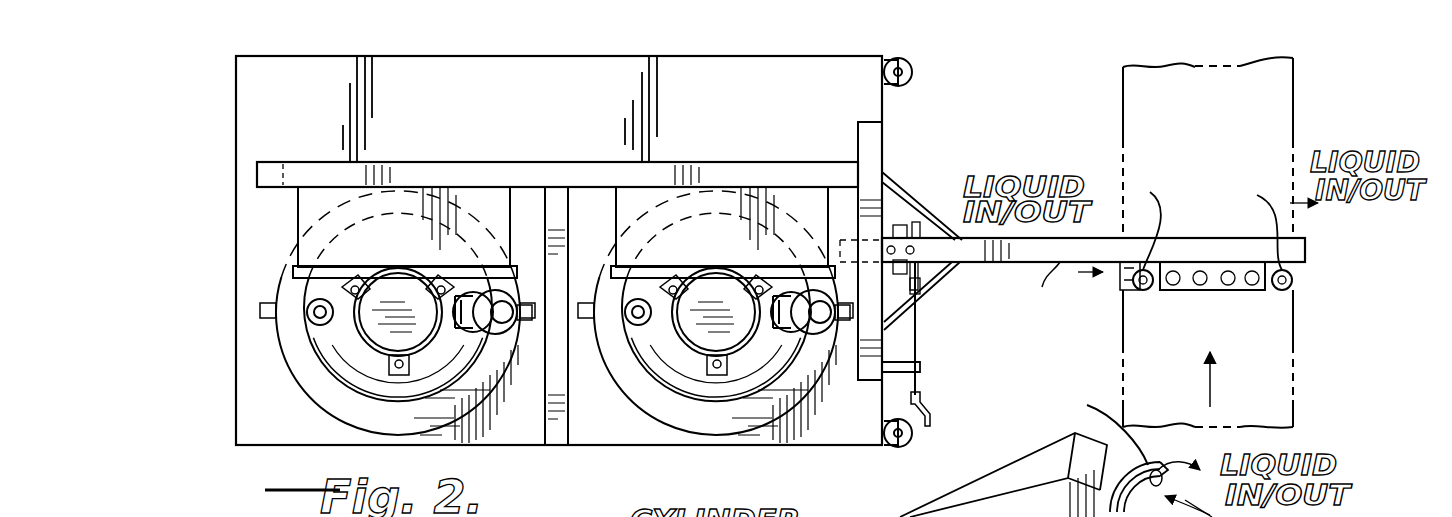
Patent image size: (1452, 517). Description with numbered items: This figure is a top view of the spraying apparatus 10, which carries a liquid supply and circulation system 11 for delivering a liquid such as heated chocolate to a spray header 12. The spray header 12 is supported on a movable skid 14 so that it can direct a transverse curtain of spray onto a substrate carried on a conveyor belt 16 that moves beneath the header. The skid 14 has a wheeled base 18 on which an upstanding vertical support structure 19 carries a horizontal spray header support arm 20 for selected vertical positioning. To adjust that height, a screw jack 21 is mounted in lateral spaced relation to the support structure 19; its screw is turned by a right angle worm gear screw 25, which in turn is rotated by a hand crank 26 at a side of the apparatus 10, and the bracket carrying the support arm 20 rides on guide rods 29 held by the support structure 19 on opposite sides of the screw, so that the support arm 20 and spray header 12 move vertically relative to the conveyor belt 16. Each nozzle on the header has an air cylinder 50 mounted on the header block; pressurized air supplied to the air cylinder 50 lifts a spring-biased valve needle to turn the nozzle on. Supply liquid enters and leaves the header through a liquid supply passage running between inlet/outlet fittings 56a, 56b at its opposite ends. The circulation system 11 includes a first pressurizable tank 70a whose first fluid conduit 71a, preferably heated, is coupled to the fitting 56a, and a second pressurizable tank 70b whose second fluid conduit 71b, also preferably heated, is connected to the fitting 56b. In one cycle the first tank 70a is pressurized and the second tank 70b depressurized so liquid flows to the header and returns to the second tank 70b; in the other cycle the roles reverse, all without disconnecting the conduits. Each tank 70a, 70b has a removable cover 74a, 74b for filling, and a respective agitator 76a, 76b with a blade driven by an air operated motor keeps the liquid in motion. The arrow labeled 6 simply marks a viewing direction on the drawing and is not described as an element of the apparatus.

The spraying apparatus 10 is at (934, 103).
The liquid supply and circulation system 11 is at (288, 378).
The spray header 12 is at (1312, 278).
The movable skid 14 is at (232, 162).
The conveyor belt 16 is at (1292, 380).
The wheeled base 18 is at (246, 256).
The vertical support structure 19 is at (874, 139).
The spray header support arm 20 is at (944, 265).
The screw jack 21 is at (934, 212).
The right angle worm gear screw 25 is at (916, 335).
The hand crank 26 is at (925, 410).
The guide rods 29 is at (1060, 287).
The air cylinder 50 is at (986, 482).
The view direction FIG. 6 is at (845, 514).
The inlet/outlet fitting 56a is at (1143, 294).
The inlet/outlet fitting 56b is at (1272, 292).
The first pressurizable tank 70a is at (290, 333).
The second pressurizable tank 70b is at (648, 395).
The first fluid conduit 71a is at (1160, 215).
The second fluid conduit 71b is at (1163, 320).
The cover 74a is at (394, 286).
The cover 74b is at (715, 290).
The agitator 76a is at (495, 288).
The agitator 76b is at (818, 288).